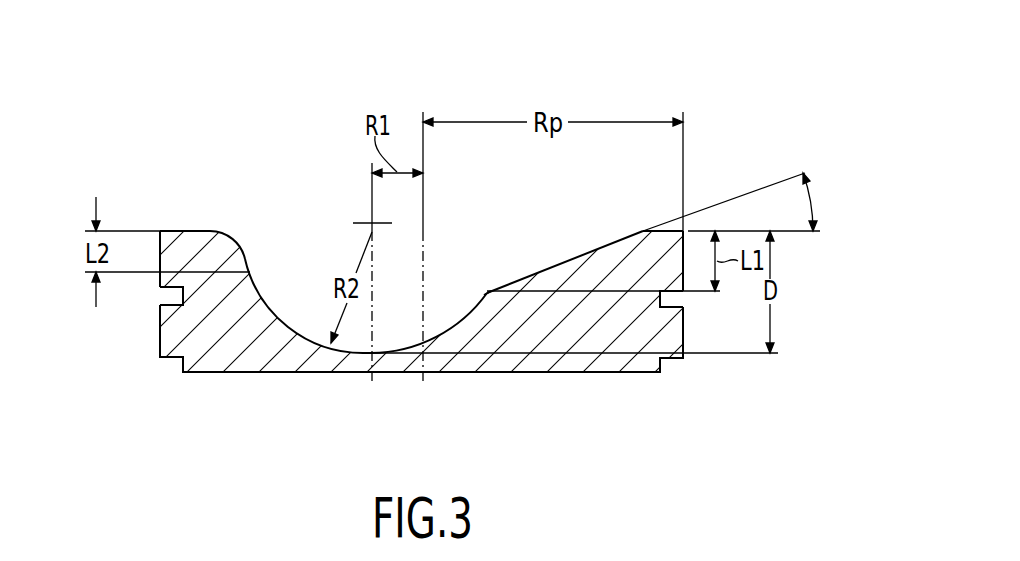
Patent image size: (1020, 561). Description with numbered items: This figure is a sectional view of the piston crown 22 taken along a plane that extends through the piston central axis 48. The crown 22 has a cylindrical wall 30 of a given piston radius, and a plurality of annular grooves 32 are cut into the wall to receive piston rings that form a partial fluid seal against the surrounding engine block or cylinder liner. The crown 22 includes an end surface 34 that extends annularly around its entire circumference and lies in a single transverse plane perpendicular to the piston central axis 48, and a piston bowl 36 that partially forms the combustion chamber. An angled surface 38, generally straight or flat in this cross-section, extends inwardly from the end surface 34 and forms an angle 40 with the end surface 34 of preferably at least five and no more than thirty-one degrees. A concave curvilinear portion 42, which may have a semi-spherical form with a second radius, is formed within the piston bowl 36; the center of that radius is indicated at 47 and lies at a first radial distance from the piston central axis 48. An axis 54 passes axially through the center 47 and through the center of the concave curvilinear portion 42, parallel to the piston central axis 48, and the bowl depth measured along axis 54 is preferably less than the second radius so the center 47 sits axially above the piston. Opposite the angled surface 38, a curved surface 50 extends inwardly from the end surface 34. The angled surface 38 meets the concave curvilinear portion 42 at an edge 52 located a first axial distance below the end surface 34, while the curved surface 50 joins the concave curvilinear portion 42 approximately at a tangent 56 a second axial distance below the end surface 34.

The crown 22 is at (640, 80).
The cylindrical wall 30 is at (160, 252).
The annular grooves 32 is at (172, 350).
The end surface 34 is at (166, 231).
The piston bowl 36 is at (313, 255).
The angled surface 38 is at (572, 256).
The angle 40 is at (808, 200).
The concave curvilinear portion 42 is at (445, 333).
The center of radius R2 47 is at (372, 223).
The piston central axis 48 is at (420, 336).
The curved surface 50 is at (243, 236).
The edge 52 is at (487, 291).
The axis 54 is at (360, 353).
The tangent 56 is at (250, 271).